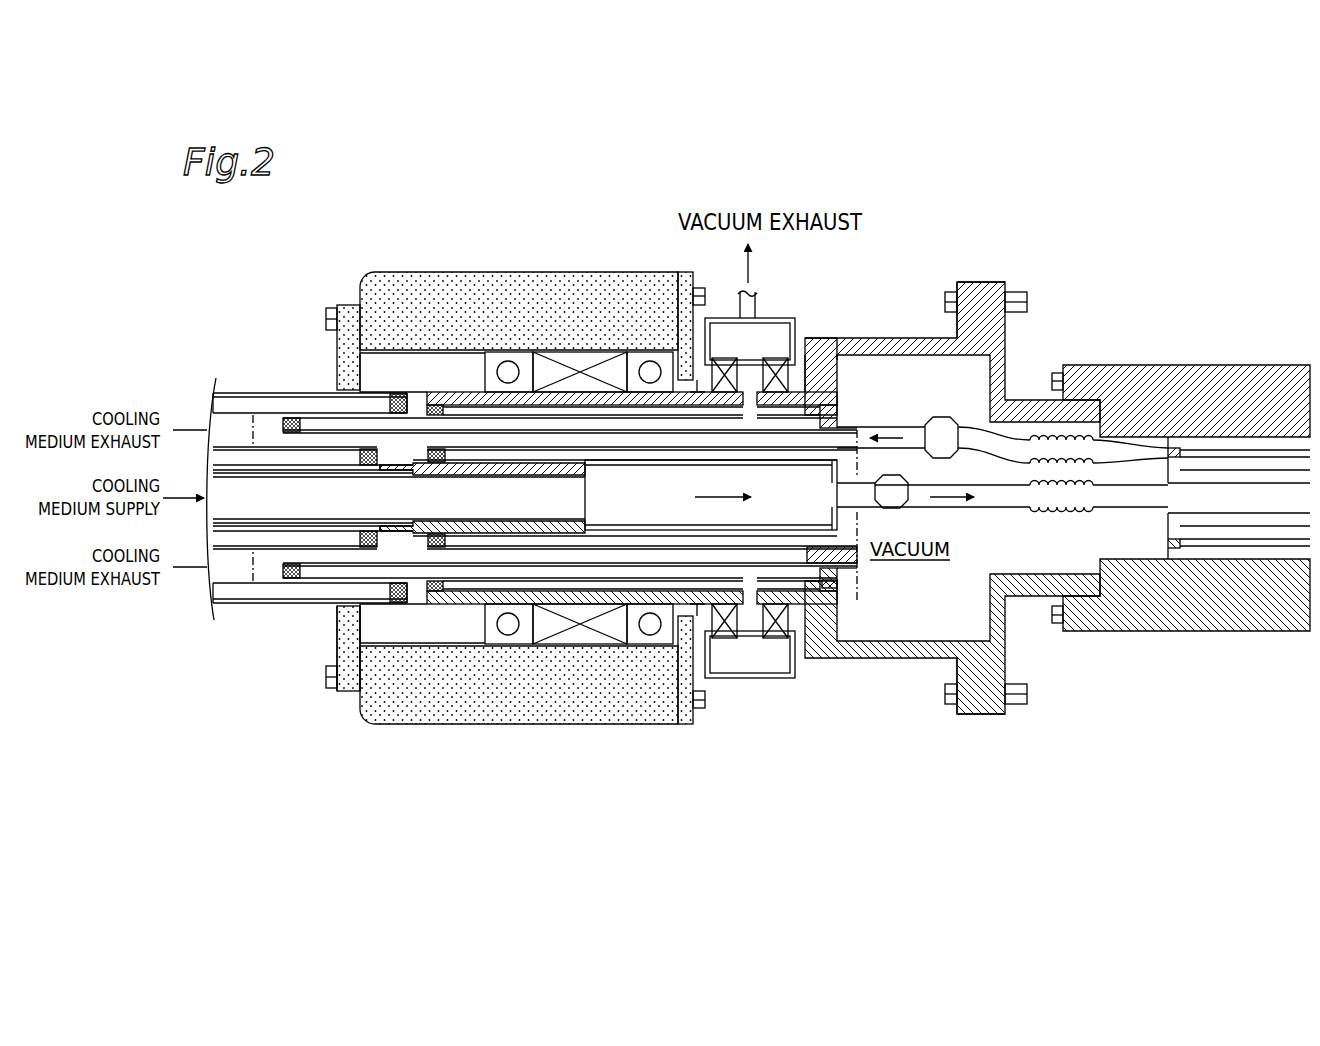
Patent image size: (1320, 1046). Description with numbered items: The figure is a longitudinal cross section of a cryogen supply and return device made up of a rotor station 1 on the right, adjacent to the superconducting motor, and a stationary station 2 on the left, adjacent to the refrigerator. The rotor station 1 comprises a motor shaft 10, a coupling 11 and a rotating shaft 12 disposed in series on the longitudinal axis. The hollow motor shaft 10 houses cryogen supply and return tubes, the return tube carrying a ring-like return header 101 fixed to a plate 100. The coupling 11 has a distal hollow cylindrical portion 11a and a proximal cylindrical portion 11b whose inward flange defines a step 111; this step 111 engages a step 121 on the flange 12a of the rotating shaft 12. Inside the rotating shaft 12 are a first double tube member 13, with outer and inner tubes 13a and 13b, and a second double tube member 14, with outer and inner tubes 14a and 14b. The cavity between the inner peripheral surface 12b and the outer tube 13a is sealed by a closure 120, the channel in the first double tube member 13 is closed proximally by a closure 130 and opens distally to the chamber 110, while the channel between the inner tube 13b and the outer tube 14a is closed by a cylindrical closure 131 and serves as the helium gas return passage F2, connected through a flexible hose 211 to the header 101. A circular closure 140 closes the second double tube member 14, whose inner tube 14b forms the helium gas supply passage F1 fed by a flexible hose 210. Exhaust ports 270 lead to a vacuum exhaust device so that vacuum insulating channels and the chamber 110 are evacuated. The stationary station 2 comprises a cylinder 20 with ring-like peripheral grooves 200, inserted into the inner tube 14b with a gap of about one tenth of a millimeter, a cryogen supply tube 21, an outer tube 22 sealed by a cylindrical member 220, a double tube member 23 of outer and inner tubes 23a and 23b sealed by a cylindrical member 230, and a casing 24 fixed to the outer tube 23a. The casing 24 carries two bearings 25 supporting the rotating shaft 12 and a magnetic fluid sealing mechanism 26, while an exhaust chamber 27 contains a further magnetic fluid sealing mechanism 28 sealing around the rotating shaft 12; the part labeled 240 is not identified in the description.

The rotor station 1 is at (1014, 230).
The stationary station 2 is at (530, 243).
The motor shaft 10 is at (1186, 364).
The coupling 11 is at (1120, 692).
The distal hollow cylindrical portion 11a is at (1008, 642).
The proximal cylindrical portion 11b is at (937, 657).
The rotating shaft 12 is at (803, 605).
The flange 12a is at (462, 603).
The inner peripheral surface 12b is at (697, 603).
The first double tube member 13 is at (328, 583).
The outer tube 13a is at (312, 600).
The inner tube 13b is at (324, 562).
The second double tube member 14 is at (457, 443).
The outer tube 14a is at (640, 445).
The inner tube 14b is at (614, 466).
The cylinder 20 is at (458, 474).
The cryogen supply tube 21 is at (245, 520).
The outer tube 22 is at (232, 440).
The double tube member 23 is at (215, 616).
The outer tube 23a is at (233, 446).
The inner tube 23b is at (267, 416).
The casing 24 is at (455, 270).
The bearings 25 is at (643, 645).
The magnetic fluid sealing mechanism 26 is at (582, 356).
The exhaust chamber 27 is at (727, 678).
The magnetic fluid sealing mechanism 28 is at (762, 625).
The plate 100 is at (1178, 525).
The return header 101 is at (1235, 535).
The chamber 110 is at (910, 603).
The step 111 is at (824, 375).
The closure 120 is at (432, 603).
The step 121 is at (811, 368).
The closure 130 is at (297, 582).
The cylindrical closure 131 is at (860, 560).
The circular closure 140 is at (413, 603).
The peripheral grooves 200 is at (528, 458).
The flexible hose 210 is at (995, 510).
The flexible hose 211 is at (975, 450).
The cylindrical member 220 is at (357, 460).
The cylindrical member 230 is at (362, 606).
The coil support 240 is at (424, 358).
The exhaust ports 270 is at (750, 396).
The helium gas supply passage F1 is at (805, 500).
The helium gas return passage F2 is at (672, 440).